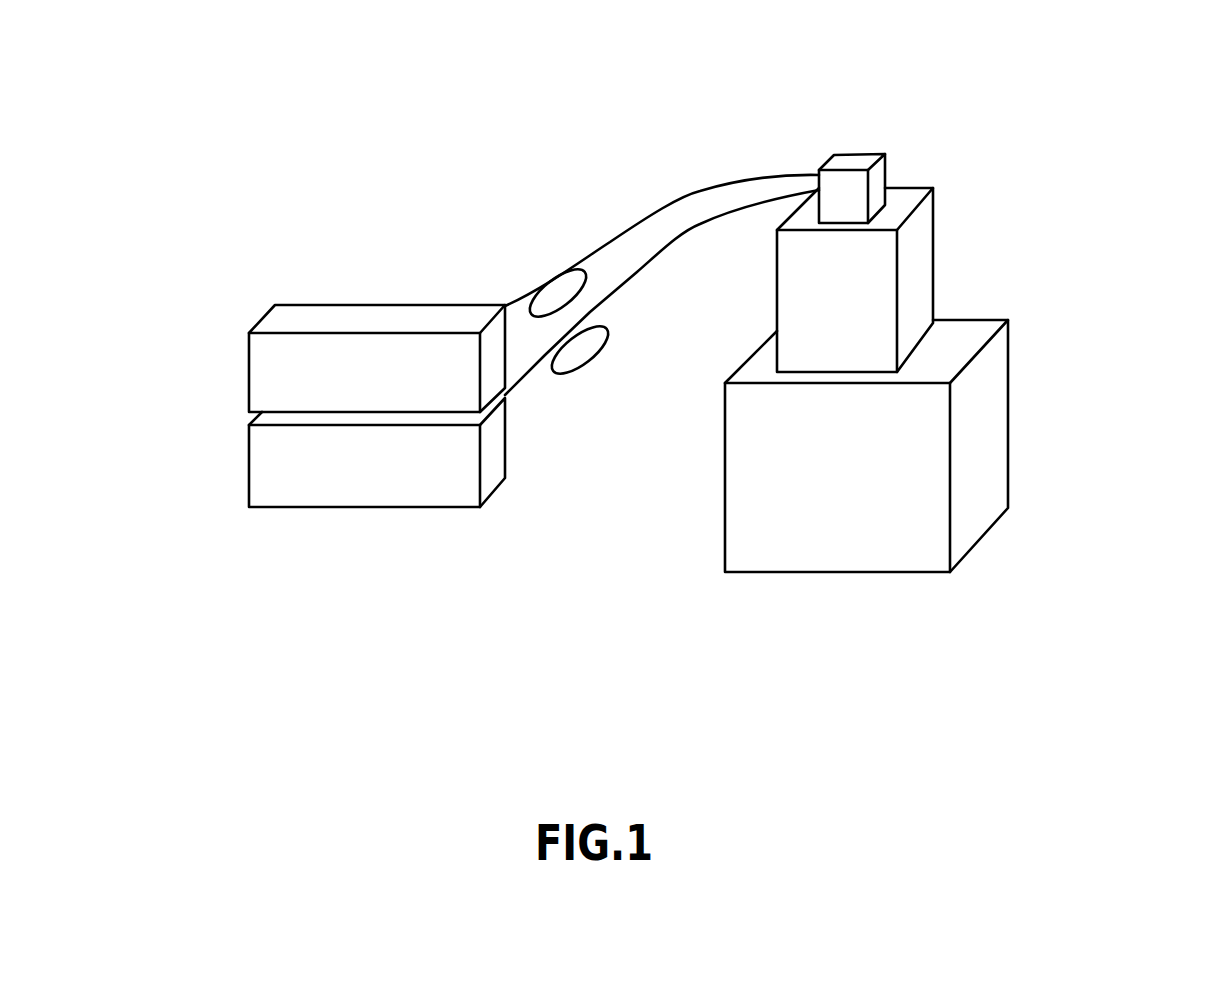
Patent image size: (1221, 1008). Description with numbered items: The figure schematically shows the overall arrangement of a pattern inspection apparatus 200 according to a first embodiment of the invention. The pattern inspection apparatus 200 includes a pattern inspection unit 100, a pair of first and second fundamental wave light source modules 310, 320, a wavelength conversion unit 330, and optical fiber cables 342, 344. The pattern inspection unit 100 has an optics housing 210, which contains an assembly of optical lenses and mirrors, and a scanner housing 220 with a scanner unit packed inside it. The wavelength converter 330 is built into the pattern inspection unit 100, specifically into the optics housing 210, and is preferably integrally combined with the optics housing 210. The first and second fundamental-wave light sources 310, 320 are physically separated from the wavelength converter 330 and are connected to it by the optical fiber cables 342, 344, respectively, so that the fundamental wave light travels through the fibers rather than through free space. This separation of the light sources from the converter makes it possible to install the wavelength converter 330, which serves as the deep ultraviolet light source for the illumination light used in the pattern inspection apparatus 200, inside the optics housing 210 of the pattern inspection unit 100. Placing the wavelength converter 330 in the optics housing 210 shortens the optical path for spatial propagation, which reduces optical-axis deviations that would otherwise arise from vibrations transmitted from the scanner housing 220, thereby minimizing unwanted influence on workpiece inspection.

The pattern inspection unit 100 is at (940, 359).
The pattern inspection apparatus 200 is at (724, 401).
The optics housing 210 is at (773, 272).
The scanner housing 220 is at (843, 573).
The first fundamental wave light source module 310 is at (320, 303).
The second fundamental wave light source module 320 is at (337, 507).
The wavelength conversion unit 330 is at (848, 152).
The optical fiber cable 342 is at (603, 243).
The optical fiber cable 344 is at (637, 272).